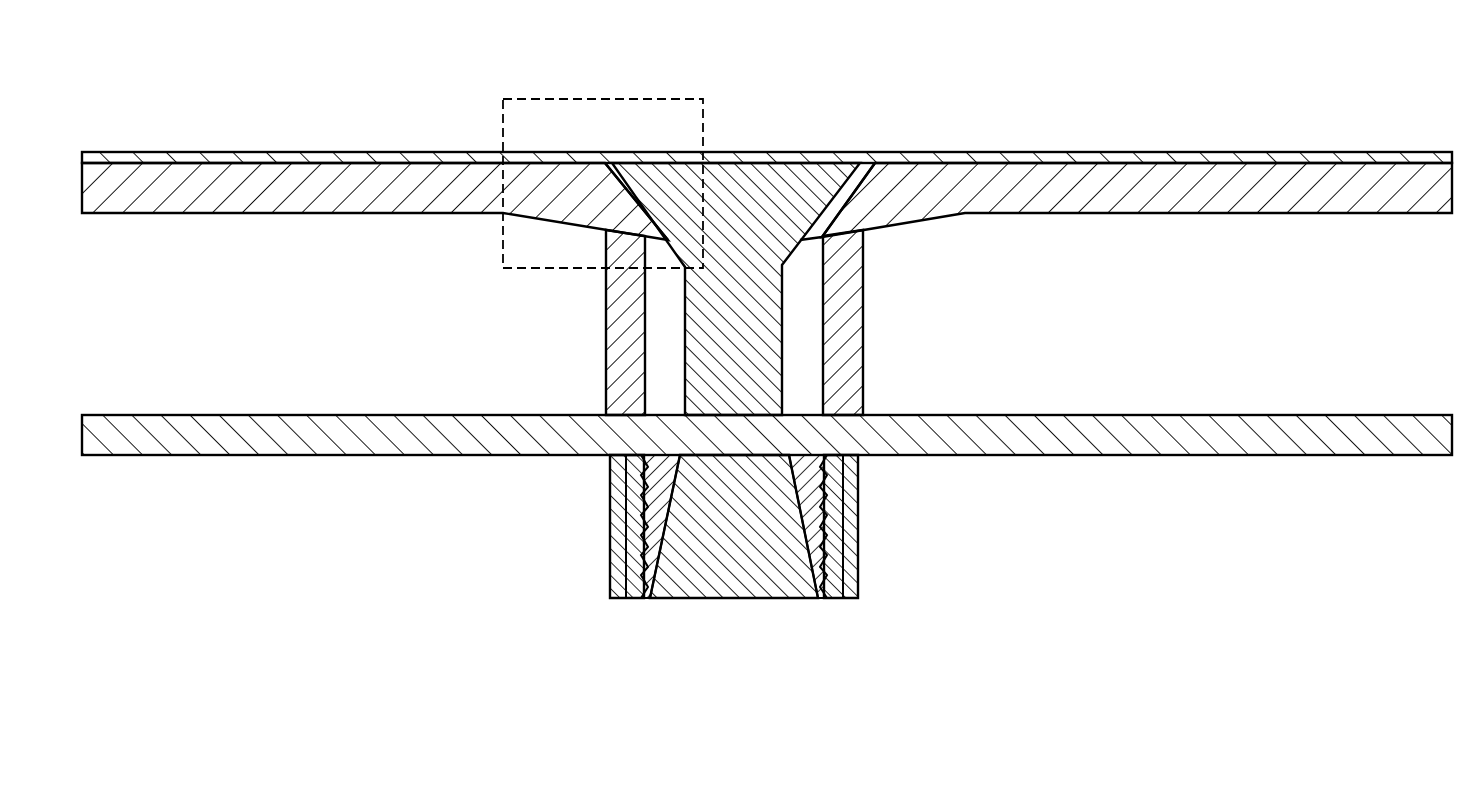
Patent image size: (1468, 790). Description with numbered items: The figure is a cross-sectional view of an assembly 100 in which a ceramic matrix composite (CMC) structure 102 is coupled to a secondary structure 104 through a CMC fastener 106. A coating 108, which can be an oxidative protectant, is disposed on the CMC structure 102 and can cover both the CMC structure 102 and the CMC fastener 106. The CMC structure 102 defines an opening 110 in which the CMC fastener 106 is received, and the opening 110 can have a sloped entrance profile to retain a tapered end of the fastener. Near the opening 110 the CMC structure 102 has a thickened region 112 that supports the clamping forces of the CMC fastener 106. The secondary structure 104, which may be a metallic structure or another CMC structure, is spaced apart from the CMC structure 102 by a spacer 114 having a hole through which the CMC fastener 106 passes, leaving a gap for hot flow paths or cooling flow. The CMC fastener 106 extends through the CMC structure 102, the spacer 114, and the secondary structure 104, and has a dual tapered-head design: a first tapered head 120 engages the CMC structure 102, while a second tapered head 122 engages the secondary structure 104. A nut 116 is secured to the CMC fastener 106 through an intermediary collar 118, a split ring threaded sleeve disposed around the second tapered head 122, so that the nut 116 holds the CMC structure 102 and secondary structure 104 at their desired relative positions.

The assembly 100 is at (212, 107).
The ceramic matrix composite (CMC) structure 102 is at (330, 172).
The secondary structure 104 is at (450, 440).
The CMC fastener 106 is at (770, 363).
The coating 108 is at (928, 158).
The opening 110 is at (848, 178).
The thickened region 112 is at (528, 98).
The spacer 114 is at (620, 334).
The nut 116 is at (852, 545).
The intermediary collar 118 is at (656, 515).
The first tapered head 120 is at (772, 182).
The second tapered head 122 is at (790, 590).